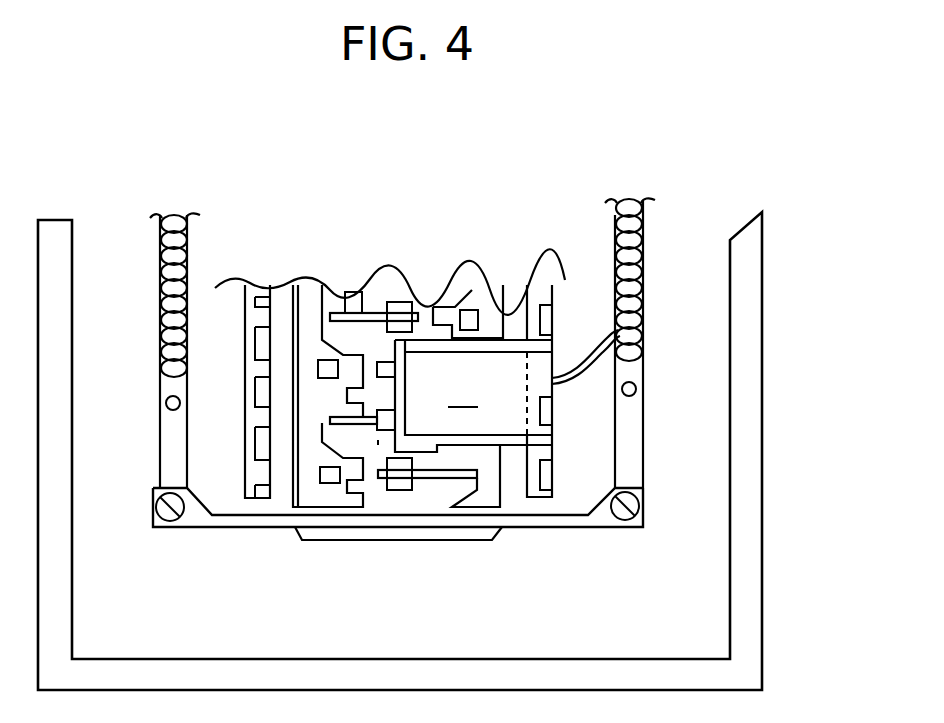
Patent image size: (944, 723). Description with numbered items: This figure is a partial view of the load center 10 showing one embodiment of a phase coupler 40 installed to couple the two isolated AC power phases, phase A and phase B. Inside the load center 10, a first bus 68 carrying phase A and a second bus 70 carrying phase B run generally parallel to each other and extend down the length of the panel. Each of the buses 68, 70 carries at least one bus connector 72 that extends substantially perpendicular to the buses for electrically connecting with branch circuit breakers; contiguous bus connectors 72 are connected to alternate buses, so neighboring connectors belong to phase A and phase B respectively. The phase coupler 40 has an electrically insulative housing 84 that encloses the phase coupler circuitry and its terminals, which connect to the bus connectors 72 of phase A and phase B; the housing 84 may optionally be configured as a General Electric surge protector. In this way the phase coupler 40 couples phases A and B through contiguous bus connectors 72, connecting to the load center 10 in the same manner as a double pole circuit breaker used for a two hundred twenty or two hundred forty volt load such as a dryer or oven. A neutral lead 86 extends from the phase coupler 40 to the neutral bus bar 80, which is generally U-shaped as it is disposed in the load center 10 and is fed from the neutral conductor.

The load center 10 is at (762, 527).
The phase coupler 40 is at (464, 396).
The first bus 68 is at (323, 287).
The second bus 70 is at (497, 290).
The bus connector 72 is at (365, 420).
The neutral bus bar 80 is at (172, 475).
The electrically insulative housing 84 is at (520, 440).
The neutral lead 86 is at (595, 365).
The phase A is at (378, 440).
The phase B is at (382, 287).